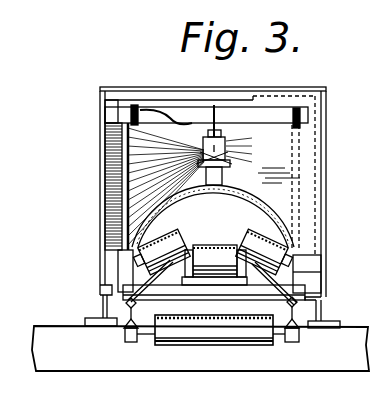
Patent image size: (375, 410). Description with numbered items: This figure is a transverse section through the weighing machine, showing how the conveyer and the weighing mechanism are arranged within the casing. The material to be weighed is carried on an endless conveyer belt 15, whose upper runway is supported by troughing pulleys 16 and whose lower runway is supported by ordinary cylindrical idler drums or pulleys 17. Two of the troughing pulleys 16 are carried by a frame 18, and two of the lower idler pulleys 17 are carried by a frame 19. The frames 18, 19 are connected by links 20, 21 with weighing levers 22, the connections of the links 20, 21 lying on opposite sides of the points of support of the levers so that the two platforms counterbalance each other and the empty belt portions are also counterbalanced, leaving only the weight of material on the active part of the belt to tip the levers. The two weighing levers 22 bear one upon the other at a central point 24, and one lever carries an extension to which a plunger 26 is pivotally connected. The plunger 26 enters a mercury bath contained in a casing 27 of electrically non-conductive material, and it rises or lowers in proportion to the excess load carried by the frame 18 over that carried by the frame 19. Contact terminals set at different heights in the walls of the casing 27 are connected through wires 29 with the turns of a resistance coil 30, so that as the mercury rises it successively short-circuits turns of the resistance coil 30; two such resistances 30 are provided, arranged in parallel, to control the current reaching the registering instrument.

The endless conveyer belt 15 is at (181, 250).
The troughing pulleys 16 is at (227, 246).
The idler drums or pulleys 17 is at (216, 340).
The frame 18 is at (260, 295).
The frame 19 is at (127, 331).
The link 20 is at (130, 263).
The link 21 is at (126, 314).
The weighing levers 22 is at (153, 113).
The central point 24 is at (216, 108).
The plunger 26 is at (222, 148).
The casing 27 is at (233, 161).
The wires 29 is at (112, 142).
The resistance coil 30 is at (110, 168).